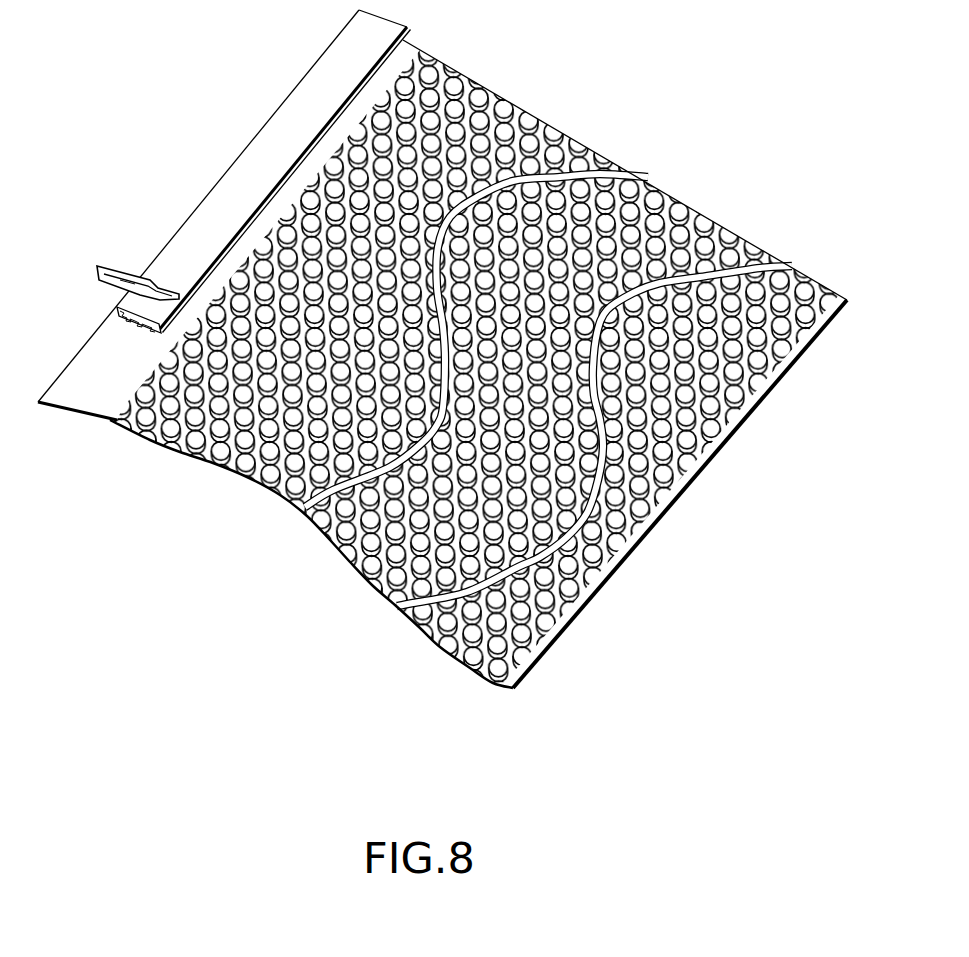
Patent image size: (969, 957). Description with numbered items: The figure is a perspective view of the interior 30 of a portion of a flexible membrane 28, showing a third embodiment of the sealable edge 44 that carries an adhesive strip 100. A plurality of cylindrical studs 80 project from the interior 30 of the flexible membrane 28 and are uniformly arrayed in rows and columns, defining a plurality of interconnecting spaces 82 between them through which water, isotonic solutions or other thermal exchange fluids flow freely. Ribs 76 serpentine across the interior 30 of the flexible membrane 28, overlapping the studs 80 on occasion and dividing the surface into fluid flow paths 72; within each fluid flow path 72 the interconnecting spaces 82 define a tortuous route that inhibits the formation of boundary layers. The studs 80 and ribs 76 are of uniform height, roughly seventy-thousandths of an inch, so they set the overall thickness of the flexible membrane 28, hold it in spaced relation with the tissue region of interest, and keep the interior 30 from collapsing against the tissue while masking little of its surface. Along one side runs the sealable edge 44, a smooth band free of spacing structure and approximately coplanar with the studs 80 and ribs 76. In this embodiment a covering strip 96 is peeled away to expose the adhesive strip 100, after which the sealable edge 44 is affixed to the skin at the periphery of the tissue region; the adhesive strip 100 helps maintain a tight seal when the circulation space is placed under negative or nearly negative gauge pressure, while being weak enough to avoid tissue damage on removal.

The flexible membrane 28 is at (610, 587).
The interior 30 is at (478, 353).
The sealable edge 44 is at (103, 423).
The fluid flow path 72 is at (190, 473).
The rib 76 is at (640, 170).
The stud 80 is at (690, 218).
The interconnecting space 82 is at (707, 432).
The covering strip 96 is at (100, 272).
The adhesive strip 100 is at (125, 303).